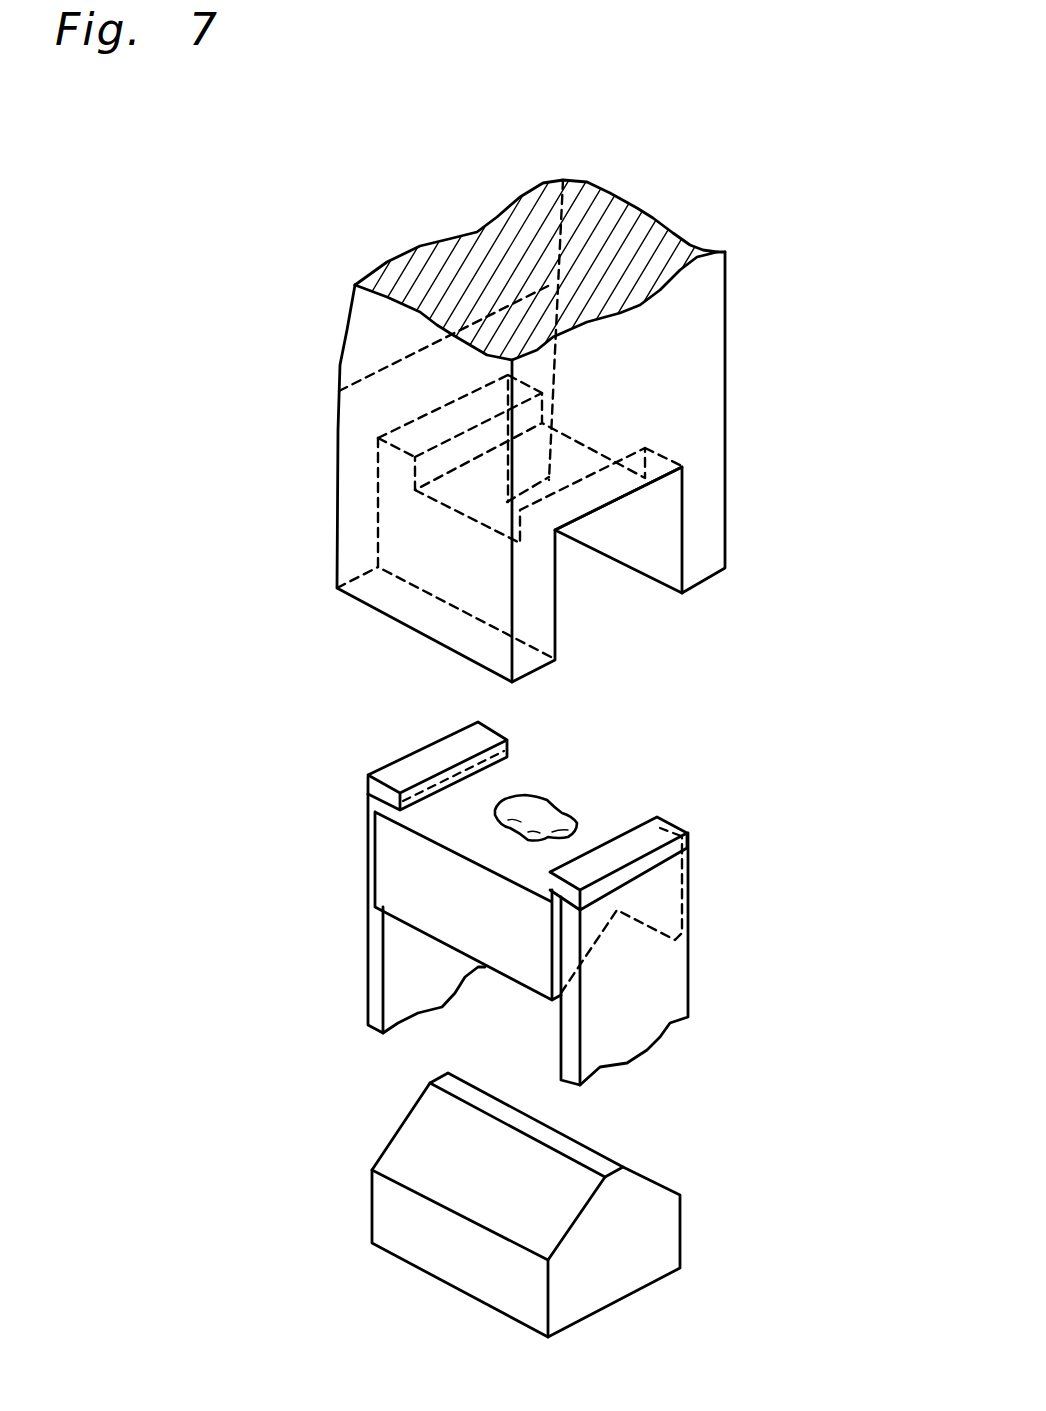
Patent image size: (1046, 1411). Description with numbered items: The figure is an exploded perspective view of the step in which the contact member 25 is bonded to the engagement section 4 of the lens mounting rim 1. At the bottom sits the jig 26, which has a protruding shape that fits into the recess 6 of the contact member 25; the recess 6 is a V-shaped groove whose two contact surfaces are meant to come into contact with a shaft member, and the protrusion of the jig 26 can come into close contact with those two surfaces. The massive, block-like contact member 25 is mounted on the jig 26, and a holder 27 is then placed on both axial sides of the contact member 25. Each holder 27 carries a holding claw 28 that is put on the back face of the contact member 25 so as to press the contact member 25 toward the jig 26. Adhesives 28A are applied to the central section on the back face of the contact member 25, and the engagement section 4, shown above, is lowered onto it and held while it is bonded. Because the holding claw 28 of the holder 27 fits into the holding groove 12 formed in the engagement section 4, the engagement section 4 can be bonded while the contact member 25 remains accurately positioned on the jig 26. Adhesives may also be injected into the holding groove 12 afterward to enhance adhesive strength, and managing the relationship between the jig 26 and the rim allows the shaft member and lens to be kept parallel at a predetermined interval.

The lens mounting rim 1 is at (393, 234).
The engagement section 4 is at (327, 490).
The holding groove 12 is at (438, 425).
The contact member 25 is at (450, 925).
The jig 26 is at (432, 1237).
The holder 27 is at (362, 818).
The holding claw 28 is at (443, 763).
The adhesives 28A is at (535, 807).
The recess 6 is at (612, 940).